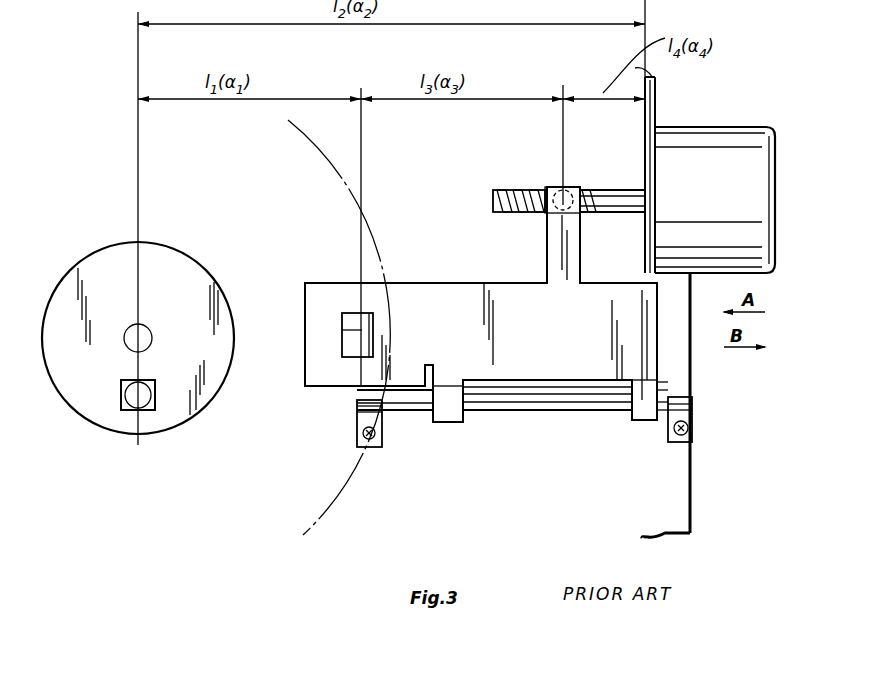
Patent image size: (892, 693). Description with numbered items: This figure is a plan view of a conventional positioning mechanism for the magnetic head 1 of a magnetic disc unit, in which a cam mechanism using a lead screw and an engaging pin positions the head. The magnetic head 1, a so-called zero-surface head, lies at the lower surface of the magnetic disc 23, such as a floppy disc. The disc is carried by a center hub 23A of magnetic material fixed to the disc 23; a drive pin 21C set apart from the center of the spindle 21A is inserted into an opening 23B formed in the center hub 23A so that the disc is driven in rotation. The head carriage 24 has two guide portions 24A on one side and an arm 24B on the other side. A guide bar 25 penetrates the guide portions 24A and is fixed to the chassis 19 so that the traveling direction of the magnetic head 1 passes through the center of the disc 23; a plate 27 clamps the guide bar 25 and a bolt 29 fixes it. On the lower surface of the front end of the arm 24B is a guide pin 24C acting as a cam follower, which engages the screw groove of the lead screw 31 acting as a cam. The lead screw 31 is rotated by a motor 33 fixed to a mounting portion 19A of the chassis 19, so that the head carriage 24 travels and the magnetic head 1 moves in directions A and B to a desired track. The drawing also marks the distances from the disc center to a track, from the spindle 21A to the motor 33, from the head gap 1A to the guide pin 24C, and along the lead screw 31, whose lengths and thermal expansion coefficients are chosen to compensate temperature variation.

The magnetic head 1 is at (343, 313).
The head gap 1A is at (362, 330).
The chassis 19 is at (682, 476).
The mounting portion 19A is at (650, 150).
The spindle 21A is at (151, 336).
The drive pin 21C is at (128, 391).
The magnetic disc 23 is at (337, 502).
The center hub 23A is at (138, 326).
The opening 23B is at (152, 410).
The head carriage 24 is at (440, 295).
The guide portions 24A is at (447, 422).
The arm 24B is at (557, 243).
The guide pin 24C is at (566, 195).
The guide bar 25 is at (512, 403).
The plate 27 is at (357, 418).
The bolt 29 is at (362, 438).
The lead screw 31 is at (493, 198).
The motor 33 is at (752, 127).